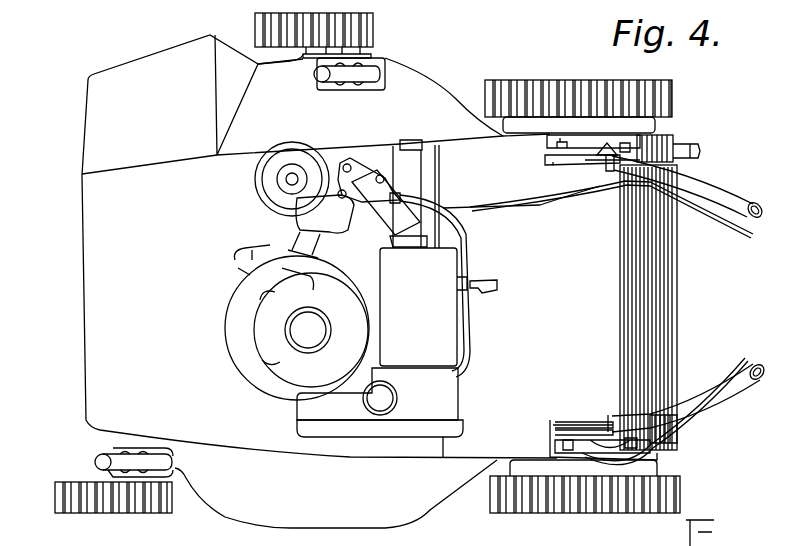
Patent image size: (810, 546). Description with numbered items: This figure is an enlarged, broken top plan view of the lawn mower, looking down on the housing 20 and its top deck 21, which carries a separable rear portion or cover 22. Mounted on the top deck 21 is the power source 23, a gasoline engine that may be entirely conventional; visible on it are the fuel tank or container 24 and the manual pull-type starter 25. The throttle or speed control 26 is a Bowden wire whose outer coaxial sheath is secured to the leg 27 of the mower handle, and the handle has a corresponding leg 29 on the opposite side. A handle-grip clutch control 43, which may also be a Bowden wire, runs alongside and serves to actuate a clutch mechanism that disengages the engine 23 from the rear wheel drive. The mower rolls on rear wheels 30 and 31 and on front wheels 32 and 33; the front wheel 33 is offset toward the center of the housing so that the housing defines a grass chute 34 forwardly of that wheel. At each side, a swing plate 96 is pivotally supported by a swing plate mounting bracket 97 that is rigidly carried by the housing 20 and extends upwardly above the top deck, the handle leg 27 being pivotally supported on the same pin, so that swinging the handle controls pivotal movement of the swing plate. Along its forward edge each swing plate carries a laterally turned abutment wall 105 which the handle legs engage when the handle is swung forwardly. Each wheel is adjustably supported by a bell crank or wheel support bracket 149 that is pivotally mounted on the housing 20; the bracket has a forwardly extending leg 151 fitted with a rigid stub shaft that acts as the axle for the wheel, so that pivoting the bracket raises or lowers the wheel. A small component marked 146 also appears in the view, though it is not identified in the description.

The housing 20 is at (372, 514).
The top deck 21 is at (102, 348).
The rear portion or cover 22 is at (663, 312).
The power source 23 is at (233, 297).
The fuel tank or container 24 is at (477, 337).
The manual pull-type starter 25 is at (363, 250).
The throttle or speed control 26 is at (747, 236).
The leg 27 is at (735, 198).
The leg 29 is at (745, 380).
The rear wheel 30 is at (673, 490).
The rear wheel 31 is at (663, 97).
The front wheel 32 is at (123, 502).
The front wheel 33 is at (258, 25).
The grass chute 34 is at (140, 68).
The handle-grip clutch control 43 is at (740, 358).
The swing plate 96 is at (597, 160).
The swing plate mounting bracket 97 is at (548, 142).
The abutment wall 105 is at (552, 170).
The valve body 146 is at (320, 90).
The wheel support bracket 149 is at (383, 57).
The forwardly extending leg 151 is at (302, 55).